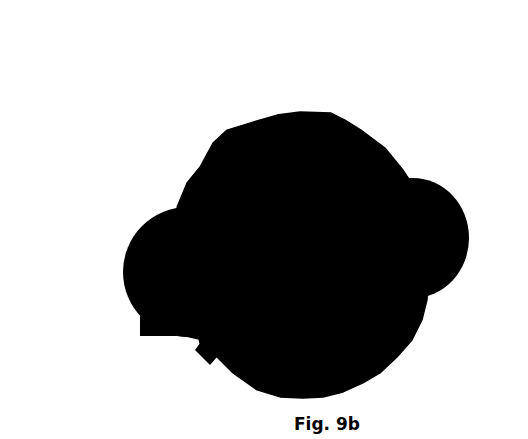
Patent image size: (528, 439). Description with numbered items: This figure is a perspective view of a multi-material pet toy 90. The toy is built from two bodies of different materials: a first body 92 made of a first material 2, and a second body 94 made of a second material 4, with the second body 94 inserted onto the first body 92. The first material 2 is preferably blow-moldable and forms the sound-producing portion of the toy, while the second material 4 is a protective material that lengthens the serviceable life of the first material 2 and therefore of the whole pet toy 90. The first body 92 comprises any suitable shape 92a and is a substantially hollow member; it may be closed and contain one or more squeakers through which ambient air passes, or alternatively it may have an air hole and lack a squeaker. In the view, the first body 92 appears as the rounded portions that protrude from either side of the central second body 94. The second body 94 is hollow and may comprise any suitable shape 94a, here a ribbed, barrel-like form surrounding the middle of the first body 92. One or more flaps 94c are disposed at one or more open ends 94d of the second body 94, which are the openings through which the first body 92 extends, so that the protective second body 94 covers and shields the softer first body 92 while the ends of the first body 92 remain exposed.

The multi-material pet toy 90 is at (258, 240).
The first body 92 is at (157, 241).
The shape of first body 92a is at (113, 267).
The first material 2 is at (105, 287).
The flap 94c is at (132, 305).
The open end 94d is at (420, 160).
The second material 4 is at (312, 87).
The shape of second body 94a is at (380, 103).
The second body 94 is at (323, 240).